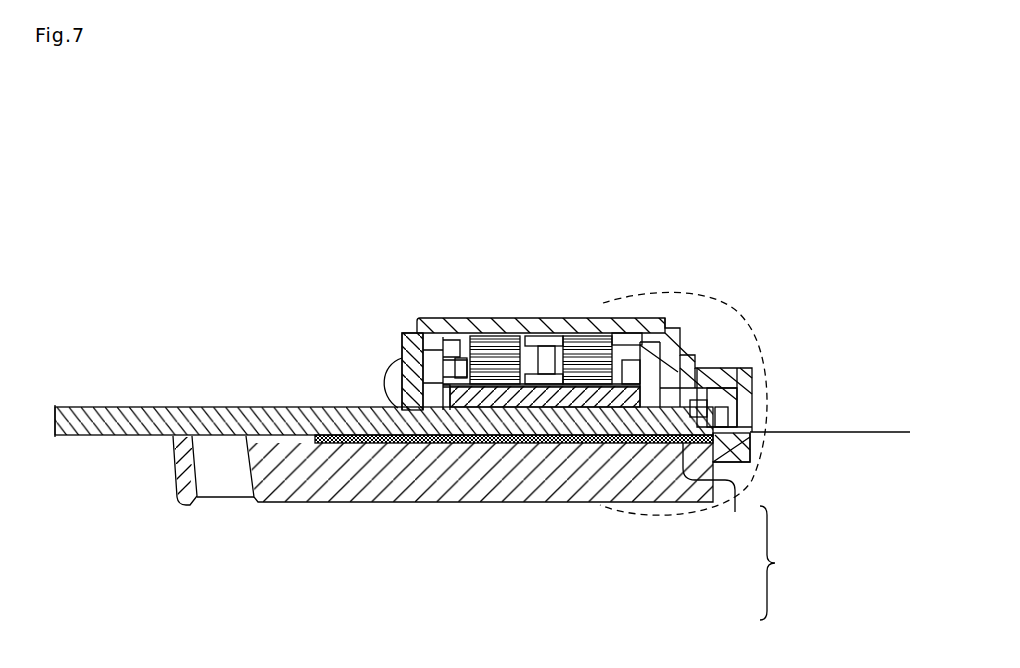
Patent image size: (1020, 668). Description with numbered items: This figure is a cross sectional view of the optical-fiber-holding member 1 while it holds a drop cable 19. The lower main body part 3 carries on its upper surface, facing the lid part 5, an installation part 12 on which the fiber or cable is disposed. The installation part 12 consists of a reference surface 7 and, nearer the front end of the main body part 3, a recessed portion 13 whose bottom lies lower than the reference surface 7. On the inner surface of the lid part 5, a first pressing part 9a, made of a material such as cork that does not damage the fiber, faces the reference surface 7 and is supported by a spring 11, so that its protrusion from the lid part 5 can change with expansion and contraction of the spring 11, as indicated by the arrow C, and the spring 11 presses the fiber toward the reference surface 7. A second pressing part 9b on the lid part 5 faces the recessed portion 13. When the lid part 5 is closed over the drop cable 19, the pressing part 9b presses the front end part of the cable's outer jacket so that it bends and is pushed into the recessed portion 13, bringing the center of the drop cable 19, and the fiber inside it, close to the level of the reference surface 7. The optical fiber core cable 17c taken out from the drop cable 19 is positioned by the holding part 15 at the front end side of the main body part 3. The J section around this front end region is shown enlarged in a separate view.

The optical-fiber-holding member 1 is at (638, 192).
The main body part 3 is at (310, 507).
The lid part 5 is at (489, 320).
The reference surface 7 is at (520, 445).
The pressing part 9a is at (398, 356).
The pressing part 9b is at (732, 368).
The spring 11 is at (598, 327).
The installation part 12 is at (776, 564).
The recessed portion 13 is at (716, 492).
The holding part 15 is at (752, 436).
The optical fiber core cable 17c is at (814, 432).
The drop cable 19 is at (113, 430).
The arrow C is at (594, 338).
The J section J is at (712, 300).